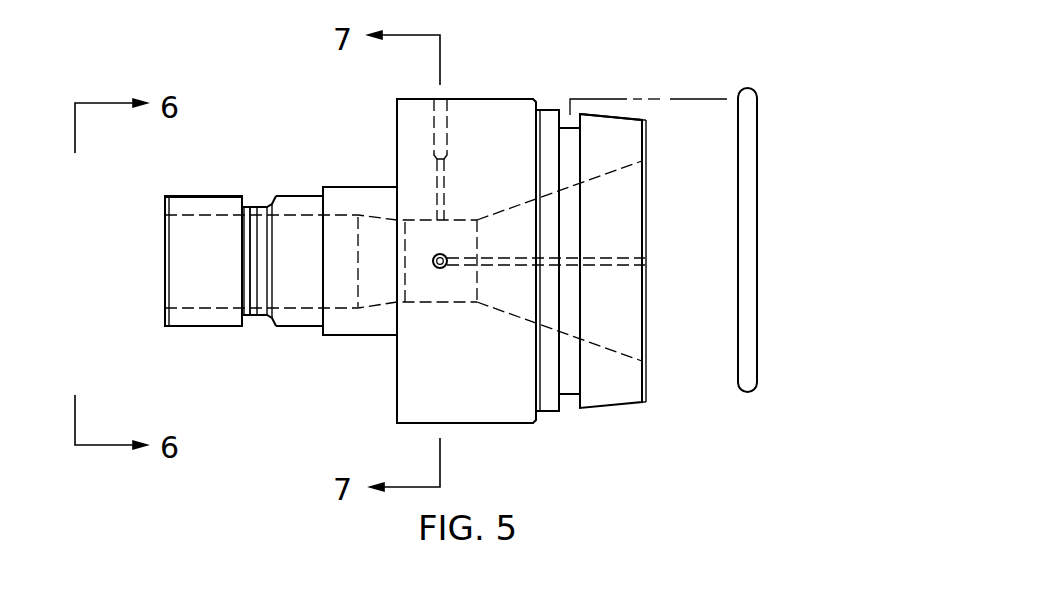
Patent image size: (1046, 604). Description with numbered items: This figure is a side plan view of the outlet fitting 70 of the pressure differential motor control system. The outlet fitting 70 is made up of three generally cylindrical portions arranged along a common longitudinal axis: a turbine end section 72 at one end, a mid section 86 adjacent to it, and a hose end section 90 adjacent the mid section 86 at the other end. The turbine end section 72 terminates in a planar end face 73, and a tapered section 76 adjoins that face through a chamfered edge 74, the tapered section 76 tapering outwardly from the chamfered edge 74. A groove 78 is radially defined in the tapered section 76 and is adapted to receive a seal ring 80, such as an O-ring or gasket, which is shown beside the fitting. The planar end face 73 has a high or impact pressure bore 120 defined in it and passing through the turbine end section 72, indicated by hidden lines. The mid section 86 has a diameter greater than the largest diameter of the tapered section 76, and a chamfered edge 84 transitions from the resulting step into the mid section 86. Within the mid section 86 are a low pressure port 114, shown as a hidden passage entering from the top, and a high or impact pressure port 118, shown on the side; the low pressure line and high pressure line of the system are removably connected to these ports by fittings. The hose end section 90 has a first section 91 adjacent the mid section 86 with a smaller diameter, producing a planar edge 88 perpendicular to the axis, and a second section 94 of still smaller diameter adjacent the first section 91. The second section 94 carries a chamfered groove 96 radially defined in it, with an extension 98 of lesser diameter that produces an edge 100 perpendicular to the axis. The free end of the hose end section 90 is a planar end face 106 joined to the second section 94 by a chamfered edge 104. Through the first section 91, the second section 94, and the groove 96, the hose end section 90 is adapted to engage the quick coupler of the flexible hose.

The outlet fitting 70 is at (590, 50).
The turbine end section 72 is at (645, 385).
The planar end face 73 is at (645, 138).
The chamfered edge 74 is at (644, 403).
The tapered section 76 is at (610, 405).
The groove 78 is at (570, 395).
The seal ring 80 is at (757, 352).
The chamfered edge 84 is at (539, 426).
The mid section 86 is at (415, 98).
The planar edge 88 is at (397, 148).
The hose end section 90 is at (203, 327).
The first section 91 is at (360, 336).
The second section 94 is at (307, 196).
The chamfered groove 96 is at (262, 206).
The extension 98 is at (252, 324).
The edge 100 is at (243, 326).
The chamfered edge 104 is at (166, 197).
The planar end face 106 is at (166, 243).
The low pressure port 114 is at (447, 98).
The high pressure port 118 is at (440, 268).
The high pressure bore 120 is at (610, 258).